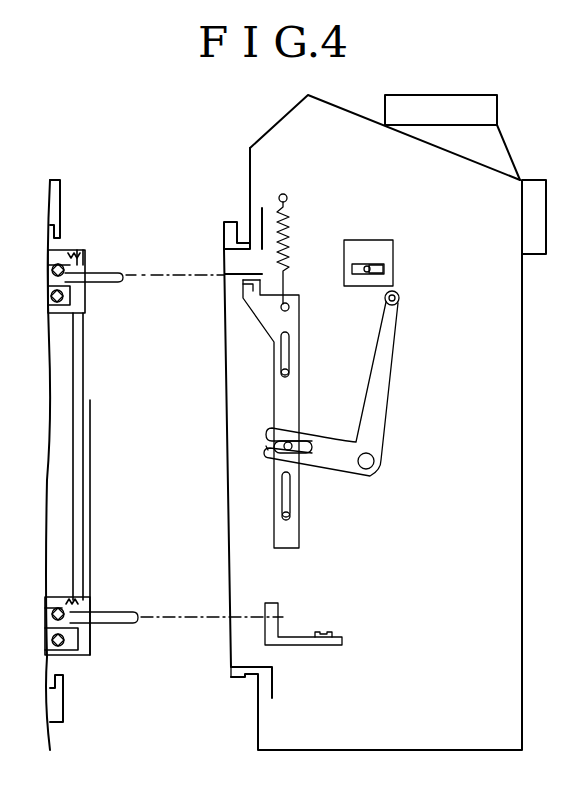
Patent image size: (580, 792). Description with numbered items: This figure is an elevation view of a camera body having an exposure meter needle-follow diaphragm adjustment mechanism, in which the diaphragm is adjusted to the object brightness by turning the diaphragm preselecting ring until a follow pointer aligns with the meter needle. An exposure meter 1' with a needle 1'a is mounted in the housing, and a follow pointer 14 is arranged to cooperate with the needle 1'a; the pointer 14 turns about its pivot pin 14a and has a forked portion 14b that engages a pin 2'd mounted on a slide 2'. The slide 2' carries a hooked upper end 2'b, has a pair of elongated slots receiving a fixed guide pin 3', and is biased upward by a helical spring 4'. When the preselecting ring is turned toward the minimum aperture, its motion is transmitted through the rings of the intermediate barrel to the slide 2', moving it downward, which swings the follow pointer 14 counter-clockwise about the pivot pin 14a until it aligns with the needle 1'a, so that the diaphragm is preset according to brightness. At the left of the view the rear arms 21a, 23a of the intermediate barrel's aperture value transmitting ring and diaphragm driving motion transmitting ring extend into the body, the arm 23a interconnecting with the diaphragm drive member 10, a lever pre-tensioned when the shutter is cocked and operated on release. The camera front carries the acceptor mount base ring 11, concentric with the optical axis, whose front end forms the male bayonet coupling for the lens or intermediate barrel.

The exposure meter 1' is at (386, 237).
The needle 1'a is at (390, 259).
The slide 2' is at (261, 414).
The hook end of lever 2'b is at (223, 299).
The pin 2'd is at (240, 426).
The fixed guide pin 3' is at (308, 427).
The helical spring 4' is at (299, 240).
The diaphragm drive member 10 is at (275, 608).
The acceptor mount base ring 11 is at (238, 672).
The follow pointer 14 is at (304, 407).
The pivot pin 14a is at (367, 471).
The forked portion 14b is at (268, 453).
The rear arm 21a is at (110, 274).
The rear arm 23a is at (107, 623).